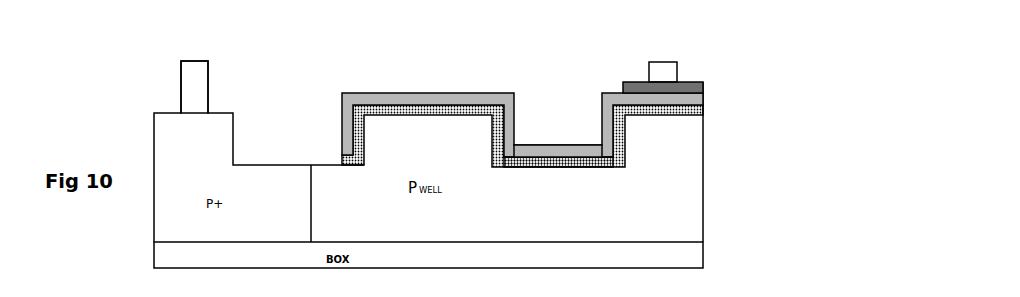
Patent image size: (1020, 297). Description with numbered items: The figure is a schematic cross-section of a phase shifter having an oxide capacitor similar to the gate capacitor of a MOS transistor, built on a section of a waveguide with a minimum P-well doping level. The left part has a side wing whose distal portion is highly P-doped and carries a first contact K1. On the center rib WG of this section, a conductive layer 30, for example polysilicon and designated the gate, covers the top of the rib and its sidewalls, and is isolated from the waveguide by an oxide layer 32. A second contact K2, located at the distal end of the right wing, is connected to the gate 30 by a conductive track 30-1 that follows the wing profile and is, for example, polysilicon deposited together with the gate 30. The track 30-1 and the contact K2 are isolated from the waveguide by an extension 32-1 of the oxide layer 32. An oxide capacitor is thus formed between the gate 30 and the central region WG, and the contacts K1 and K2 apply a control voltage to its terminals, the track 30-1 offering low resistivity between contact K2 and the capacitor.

The conductive layer 30 is at (413, 99).
The oxide layer 32 is at (356, 106).
The conductive track 30-1 is at (580, 150).
The extension of the oxide layer 32-1 is at (531, 167).
The first contact K1 is at (202, 77).
The second contact K2 is at (663, 66).
The center rib WG is at (402, 143).